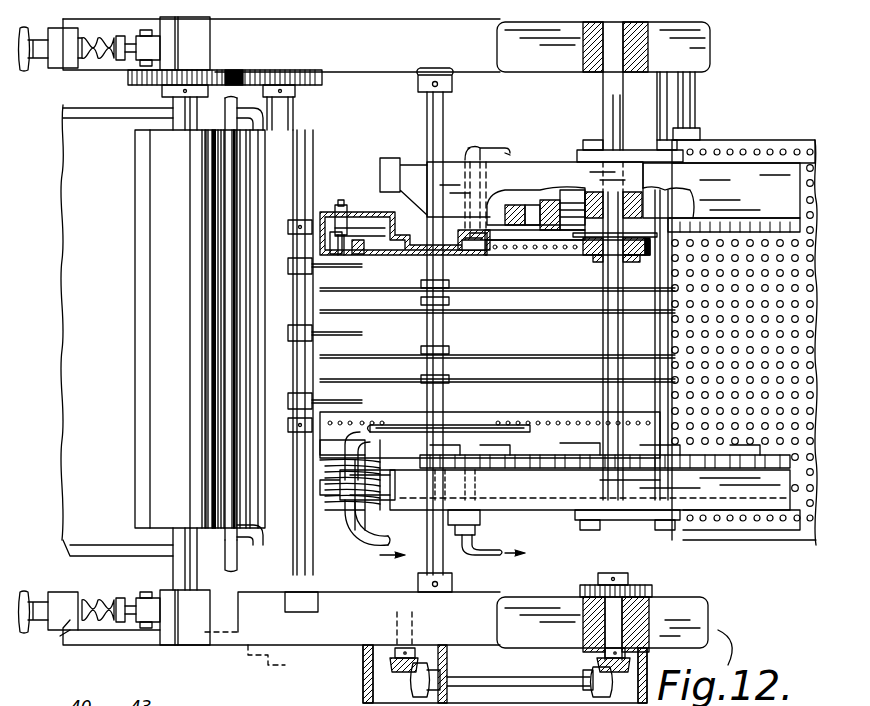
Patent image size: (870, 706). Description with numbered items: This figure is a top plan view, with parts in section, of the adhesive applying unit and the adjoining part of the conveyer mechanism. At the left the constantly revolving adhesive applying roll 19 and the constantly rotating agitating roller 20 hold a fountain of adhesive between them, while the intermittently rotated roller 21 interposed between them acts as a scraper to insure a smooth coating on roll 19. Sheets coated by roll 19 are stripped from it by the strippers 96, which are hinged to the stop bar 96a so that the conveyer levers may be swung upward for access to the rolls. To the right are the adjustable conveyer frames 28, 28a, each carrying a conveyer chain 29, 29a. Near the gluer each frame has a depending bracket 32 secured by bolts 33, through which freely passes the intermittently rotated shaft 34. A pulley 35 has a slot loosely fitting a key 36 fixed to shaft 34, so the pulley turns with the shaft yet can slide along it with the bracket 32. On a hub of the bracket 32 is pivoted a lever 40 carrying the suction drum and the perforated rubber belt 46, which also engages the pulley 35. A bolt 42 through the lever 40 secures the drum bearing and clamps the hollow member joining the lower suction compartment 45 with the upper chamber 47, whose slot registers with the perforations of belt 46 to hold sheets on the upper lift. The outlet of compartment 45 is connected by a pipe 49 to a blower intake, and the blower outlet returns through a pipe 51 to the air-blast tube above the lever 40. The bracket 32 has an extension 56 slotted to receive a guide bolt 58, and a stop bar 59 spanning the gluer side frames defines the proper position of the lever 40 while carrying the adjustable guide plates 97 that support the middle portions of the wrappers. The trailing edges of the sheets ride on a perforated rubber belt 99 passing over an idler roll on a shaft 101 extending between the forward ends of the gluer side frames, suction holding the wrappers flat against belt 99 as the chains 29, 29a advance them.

The adhesive applying roll 19 is at (275, 318).
The agitating roller 20 is at (160, 196).
The intermittently rotated roller 21 is at (235, 270).
The adjustable conveyer frame 28 is at (725, 180).
The adjustable conveyer frame 28a is at (745, 493).
The chain 29 is at (748, 226).
The chain 29a is at (512, 462).
The depending bracket 32 is at (630, 158).
The bolts 33 is at (598, 144).
The intermittently rotated shaft 34 is at (620, 88).
The pulley 35 is at (590, 248).
The key 36 is at (620, 330).
The lever 40 is at (548, 212).
The bolt 42 is at (372, 212).
The suction compartment 45 is at (478, 248).
The belt 46 is at (545, 247).
The upper chamber 47 is at (408, 244).
The pipe 49 is at (478, 158).
The pipe 51 is at (388, 545).
The extension 56 is at (545, 222).
The guide bolt 58 is at (523, 205).
The stop bar 59 is at (430, 107).
The strippers 96 is at (345, 335).
The stop bar 96a is at (290, 310).
The guide plates 97 is at (530, 292).
The belt 99 is at (772, 146).
The shaft 101 is at (690, 100).